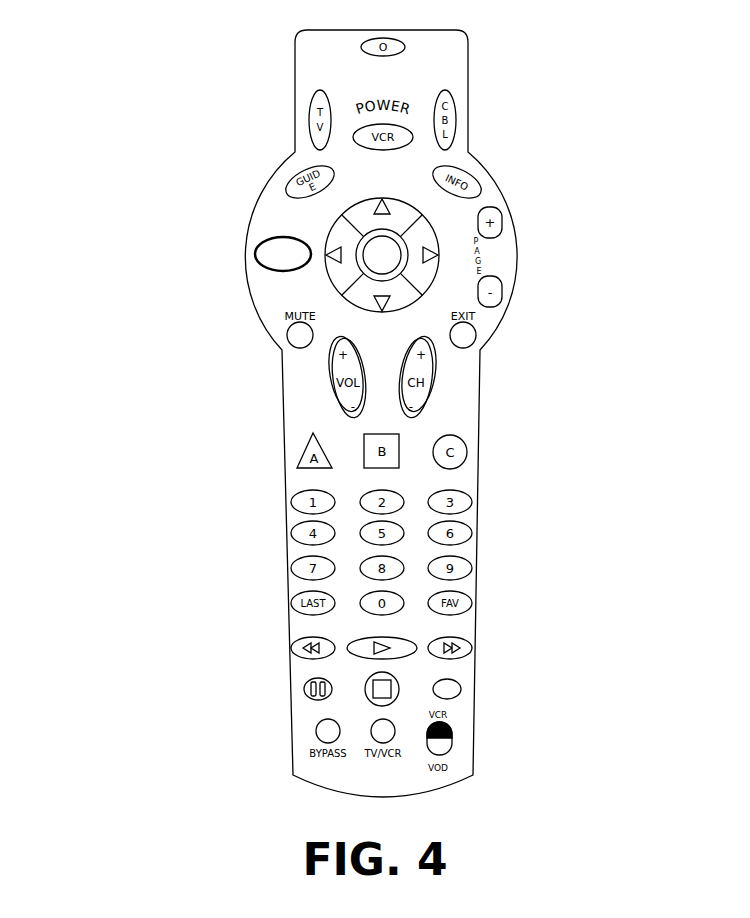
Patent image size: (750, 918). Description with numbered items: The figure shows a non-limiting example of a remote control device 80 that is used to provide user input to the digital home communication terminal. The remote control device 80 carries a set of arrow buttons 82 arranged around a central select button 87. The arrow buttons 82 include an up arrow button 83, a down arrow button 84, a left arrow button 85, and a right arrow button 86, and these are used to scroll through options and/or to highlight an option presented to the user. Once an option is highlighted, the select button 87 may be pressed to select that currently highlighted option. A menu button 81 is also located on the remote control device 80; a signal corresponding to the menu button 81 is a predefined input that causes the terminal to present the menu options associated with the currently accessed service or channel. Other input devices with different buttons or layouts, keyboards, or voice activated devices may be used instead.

The remote control device 80 is at (88, 132).
The menu button 81 is at (255, 255).
The arrow buttons 82 is at (654, 175).
The up arrow button 83 is at (372, 200).
The down arrow button 84 is at (408, 300).
The left arrow button 85 is at (343, 284).
The right arrow button 86 is at (428, 240).
The select button 87 is at (362, 243).